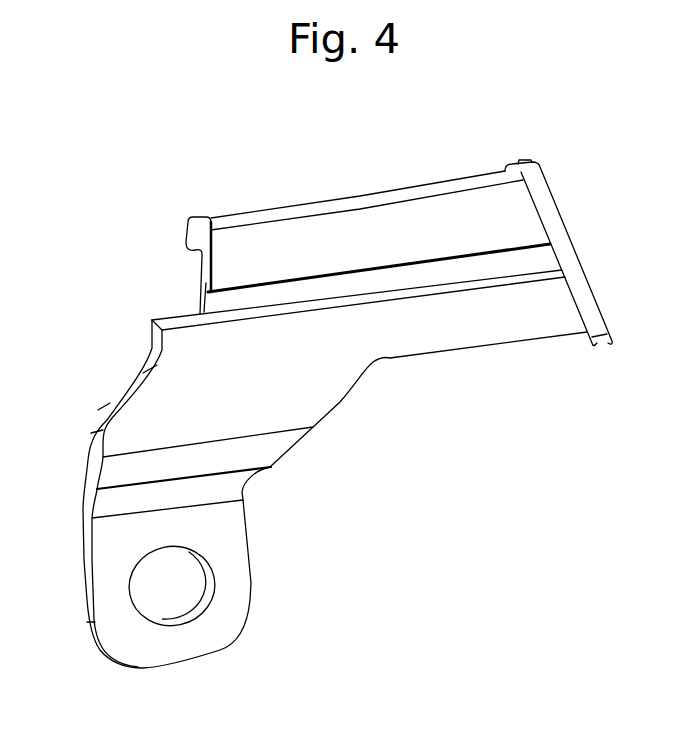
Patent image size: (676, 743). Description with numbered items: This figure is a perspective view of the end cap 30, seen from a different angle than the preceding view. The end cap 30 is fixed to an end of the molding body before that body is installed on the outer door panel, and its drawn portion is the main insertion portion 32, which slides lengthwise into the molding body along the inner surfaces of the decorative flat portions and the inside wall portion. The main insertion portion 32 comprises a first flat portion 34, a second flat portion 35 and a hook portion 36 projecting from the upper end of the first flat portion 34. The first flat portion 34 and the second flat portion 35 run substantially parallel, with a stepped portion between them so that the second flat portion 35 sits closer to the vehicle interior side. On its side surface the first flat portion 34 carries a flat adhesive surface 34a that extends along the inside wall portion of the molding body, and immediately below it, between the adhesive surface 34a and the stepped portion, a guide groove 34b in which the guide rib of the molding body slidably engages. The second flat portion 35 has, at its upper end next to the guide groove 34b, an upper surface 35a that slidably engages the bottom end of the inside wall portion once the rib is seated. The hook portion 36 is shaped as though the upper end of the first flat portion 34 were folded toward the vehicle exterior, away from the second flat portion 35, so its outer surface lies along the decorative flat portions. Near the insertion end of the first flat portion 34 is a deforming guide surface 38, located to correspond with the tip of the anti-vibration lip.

The end cap 30 is at (471, 365).
The main insertion portion 32 is at (93, 267).
The first flat portion 34 is at (199, 293).
The adhesive surface 34a is at (350, 228).
The guide groove 34b is at (460, 268).
The second flat portion 35 is at (177, 344).
The upper surface 35a is at (385, 293).
The hook portion 36 is at (190, 235).
The deforming guide surface 38 is at (223, 277).